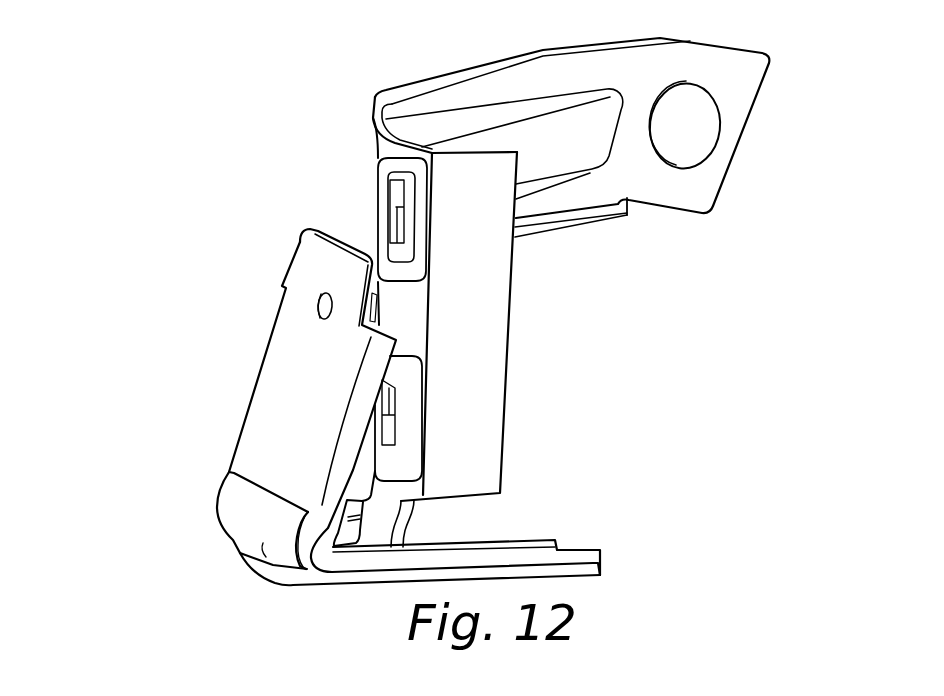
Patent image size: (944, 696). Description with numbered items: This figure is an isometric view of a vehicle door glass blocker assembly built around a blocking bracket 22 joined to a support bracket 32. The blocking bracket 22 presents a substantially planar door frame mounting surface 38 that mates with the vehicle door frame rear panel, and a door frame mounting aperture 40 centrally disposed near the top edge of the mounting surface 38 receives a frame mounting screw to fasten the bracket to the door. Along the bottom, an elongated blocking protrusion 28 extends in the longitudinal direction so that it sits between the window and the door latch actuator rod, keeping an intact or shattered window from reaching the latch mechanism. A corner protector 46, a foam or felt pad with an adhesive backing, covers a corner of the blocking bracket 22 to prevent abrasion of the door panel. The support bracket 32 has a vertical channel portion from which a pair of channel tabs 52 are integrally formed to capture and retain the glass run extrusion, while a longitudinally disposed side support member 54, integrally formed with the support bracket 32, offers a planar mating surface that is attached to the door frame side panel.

The blocking bracket 22 is at (168, 447).
The blocking protrusion 28 is at (577, 551).
The support bracket 32 is at (467, 339).
The door frame mounting surface 38 is at (283, 384).
The door frame mounting aperture 40 is at (323, 300).
The corner protector 46 is at (253, 522).
The channel tab 52 is at (393, 237).
The side support member 54 is at (733, 72).